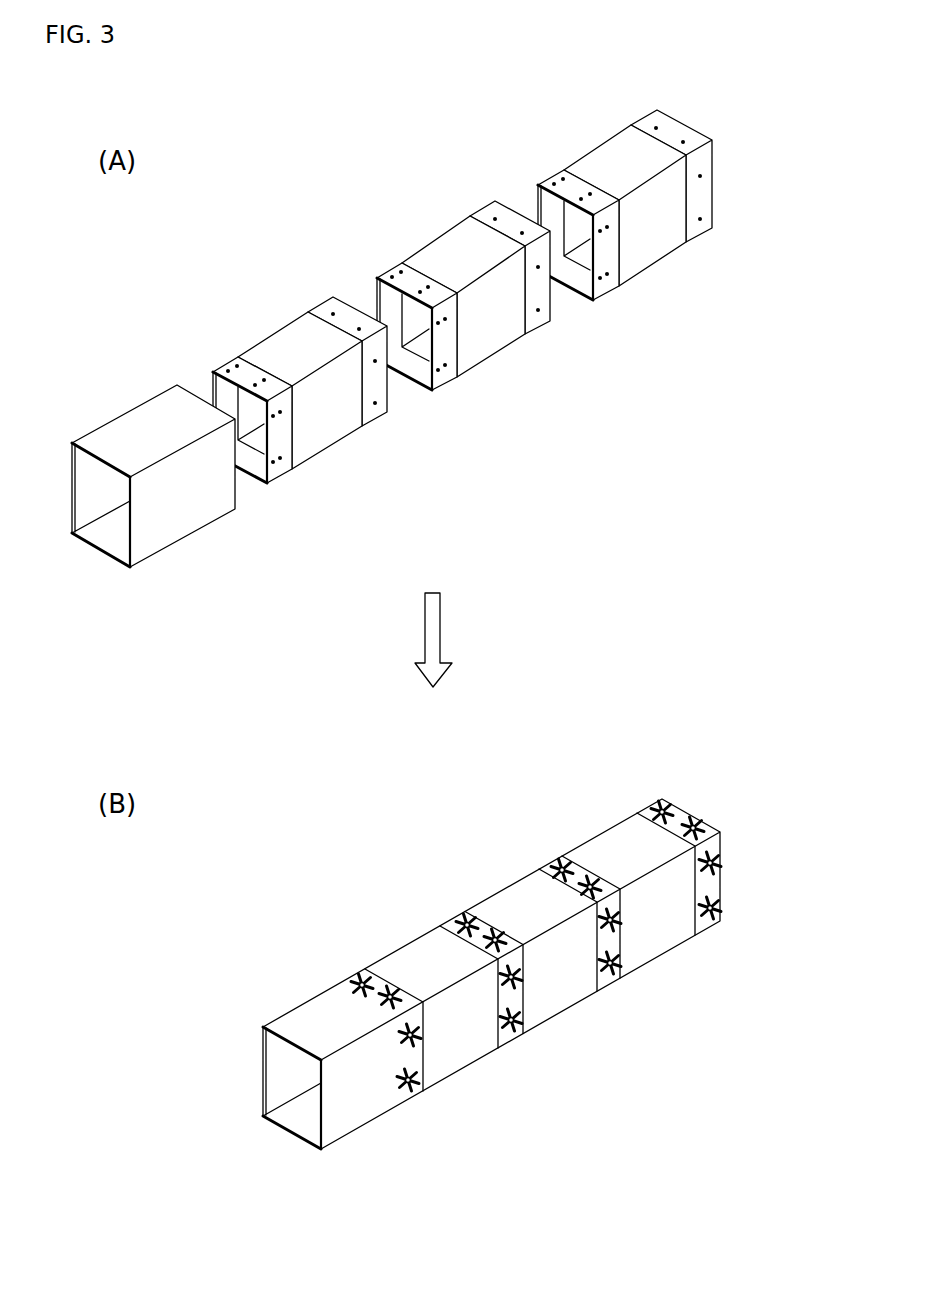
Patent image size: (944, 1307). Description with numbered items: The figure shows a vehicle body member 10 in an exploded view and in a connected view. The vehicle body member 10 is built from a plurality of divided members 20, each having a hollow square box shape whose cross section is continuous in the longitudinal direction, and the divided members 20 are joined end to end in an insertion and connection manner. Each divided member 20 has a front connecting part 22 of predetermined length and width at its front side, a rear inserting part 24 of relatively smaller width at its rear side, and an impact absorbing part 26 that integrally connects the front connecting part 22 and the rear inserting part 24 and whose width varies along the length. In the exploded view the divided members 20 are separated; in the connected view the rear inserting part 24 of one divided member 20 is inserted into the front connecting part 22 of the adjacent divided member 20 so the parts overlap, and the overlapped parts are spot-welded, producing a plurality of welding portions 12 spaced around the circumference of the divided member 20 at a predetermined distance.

The vehicle body member 10 is at (511, 907).
The welding portions 12 is at (392, 990).
The divided member 20 is at (445, 644).
The front connecting part 22 is at (710, 193).
The rear inserting part 24 is at (603, 267).
The impact absorbing part 26 is at (665, 250).